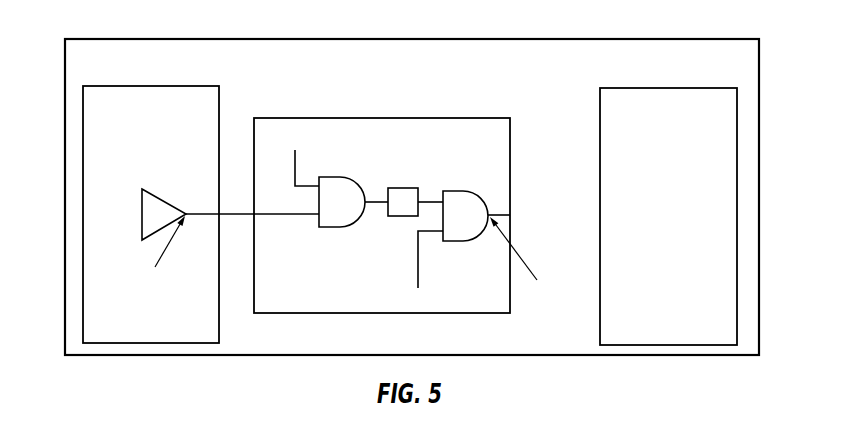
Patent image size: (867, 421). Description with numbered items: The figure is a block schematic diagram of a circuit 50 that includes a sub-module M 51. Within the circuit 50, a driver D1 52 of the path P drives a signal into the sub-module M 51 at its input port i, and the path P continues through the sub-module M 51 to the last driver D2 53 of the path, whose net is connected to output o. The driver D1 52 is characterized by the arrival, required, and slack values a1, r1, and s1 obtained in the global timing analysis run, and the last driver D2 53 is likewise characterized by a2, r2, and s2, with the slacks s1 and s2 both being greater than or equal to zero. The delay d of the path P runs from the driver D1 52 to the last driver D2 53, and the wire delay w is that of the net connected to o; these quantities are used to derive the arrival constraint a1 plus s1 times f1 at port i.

The circuit 50 is at (536, 56).
The sub-module M 51 is at (414, 213).
The driver D1 52 is at (182, 196).
The last driver D2 53 is at (582, 197).